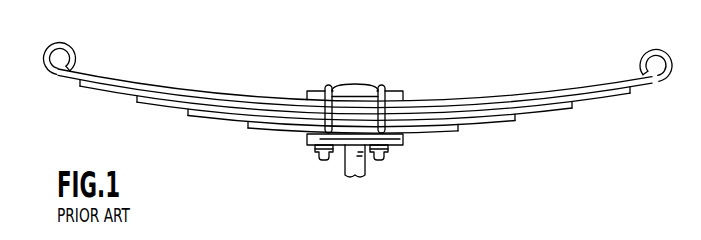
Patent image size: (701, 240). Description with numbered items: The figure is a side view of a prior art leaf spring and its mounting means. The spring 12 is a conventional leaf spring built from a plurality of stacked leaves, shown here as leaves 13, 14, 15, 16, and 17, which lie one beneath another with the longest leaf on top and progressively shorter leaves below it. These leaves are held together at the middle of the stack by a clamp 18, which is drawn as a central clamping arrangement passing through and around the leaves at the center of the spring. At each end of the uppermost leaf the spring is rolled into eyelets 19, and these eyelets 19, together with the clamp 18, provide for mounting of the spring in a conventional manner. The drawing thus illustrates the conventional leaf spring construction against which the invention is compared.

The spring 12 is at (533, 124).
The leaf 13 is at (60, 82).
The leaf 14 is at (113, 94).
The leaf 15 is at (172, 108).
The leaf 16 is at (225, 120).
The leaf 17 is at (278, 131).
The clamp 18 is at (366, 83).
The eyelets 19 is at (70, 46).